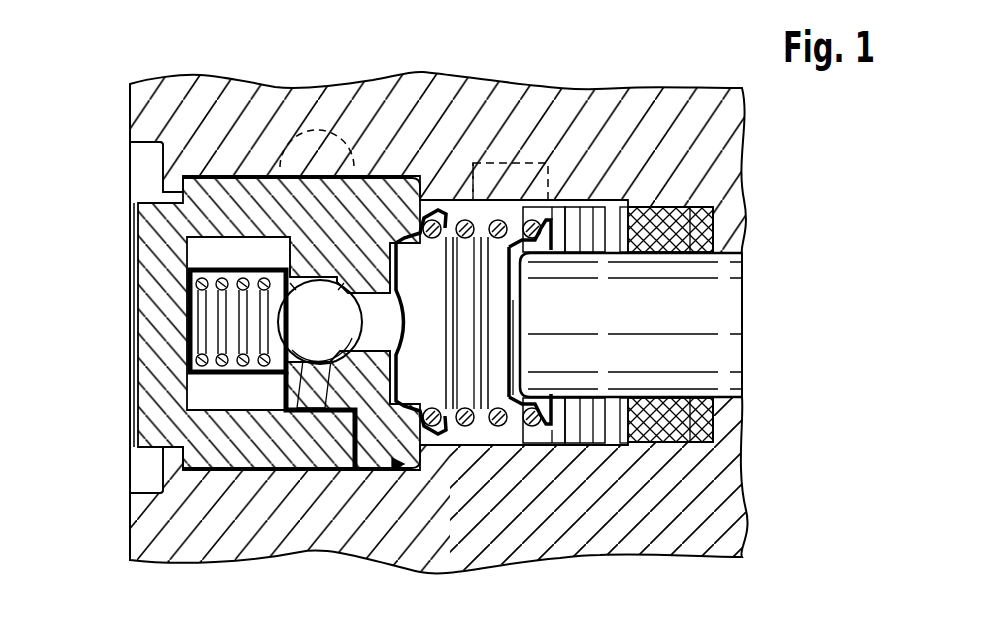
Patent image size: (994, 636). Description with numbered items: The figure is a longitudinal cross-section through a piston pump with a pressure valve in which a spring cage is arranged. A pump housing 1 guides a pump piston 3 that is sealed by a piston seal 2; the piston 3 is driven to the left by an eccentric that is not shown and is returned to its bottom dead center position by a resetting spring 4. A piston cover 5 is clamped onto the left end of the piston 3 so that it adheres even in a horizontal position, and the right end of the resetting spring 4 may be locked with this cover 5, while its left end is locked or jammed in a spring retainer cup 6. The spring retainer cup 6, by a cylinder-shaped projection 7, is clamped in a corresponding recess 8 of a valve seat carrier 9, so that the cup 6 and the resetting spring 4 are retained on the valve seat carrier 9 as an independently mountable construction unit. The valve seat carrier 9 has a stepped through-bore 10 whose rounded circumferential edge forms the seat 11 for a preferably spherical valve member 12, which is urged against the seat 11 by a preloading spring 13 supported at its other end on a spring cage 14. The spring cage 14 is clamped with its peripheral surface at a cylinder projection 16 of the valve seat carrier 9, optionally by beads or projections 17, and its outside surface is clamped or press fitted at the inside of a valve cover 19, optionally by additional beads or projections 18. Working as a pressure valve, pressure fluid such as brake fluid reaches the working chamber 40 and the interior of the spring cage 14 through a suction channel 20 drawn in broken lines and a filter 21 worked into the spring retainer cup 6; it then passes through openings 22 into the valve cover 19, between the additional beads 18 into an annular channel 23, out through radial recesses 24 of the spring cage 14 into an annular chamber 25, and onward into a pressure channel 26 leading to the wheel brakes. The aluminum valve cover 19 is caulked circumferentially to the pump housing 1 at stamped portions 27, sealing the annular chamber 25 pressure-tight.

The pump housing 1 is at (697, 150).
The piston seal 2 is at (668, 236).
The pump piston 3 is at (682, 302).
The resetting spring 4 is at (590, 444).
The piston cover 5 is at (542, 432).
The spring retainer cup 6 is at (470, 424).
The cylinder-shaped projection 7 is at (505, 428).
The recess 8 is at (438, 428).
The valve seat carrier 9 is at (408, 434).
The stepped through-bore 10 is at (356, 268).
The seat 11 is at (314, 388).
The valve member 12 is at (276, 412).
The preloading spring 13 is at (220, 333).
The spring cage 14 is at (183, 250).
The cylinder projection 16 is at (338, 262).
The beads, bulged portions, or projections 17 is at (268, 198).
The additional beads or projections 18 is at (190, 445).
The valve cover 19 is at (173, 424).
The suction channel 20 is at (480, 205).
The filter 21 is at (480, 250).
The openings 22 is at (282, 390).
The annular channel 23 is at (300, 350).
The radial recesses 24 is at (396, 470).
The annular chamber 25 is at (300, 412).
The pressure channel 26 is at (290, 136).
The stamped portions 27 is at (170, 180).
The working chamber 40 is at (482, 237).